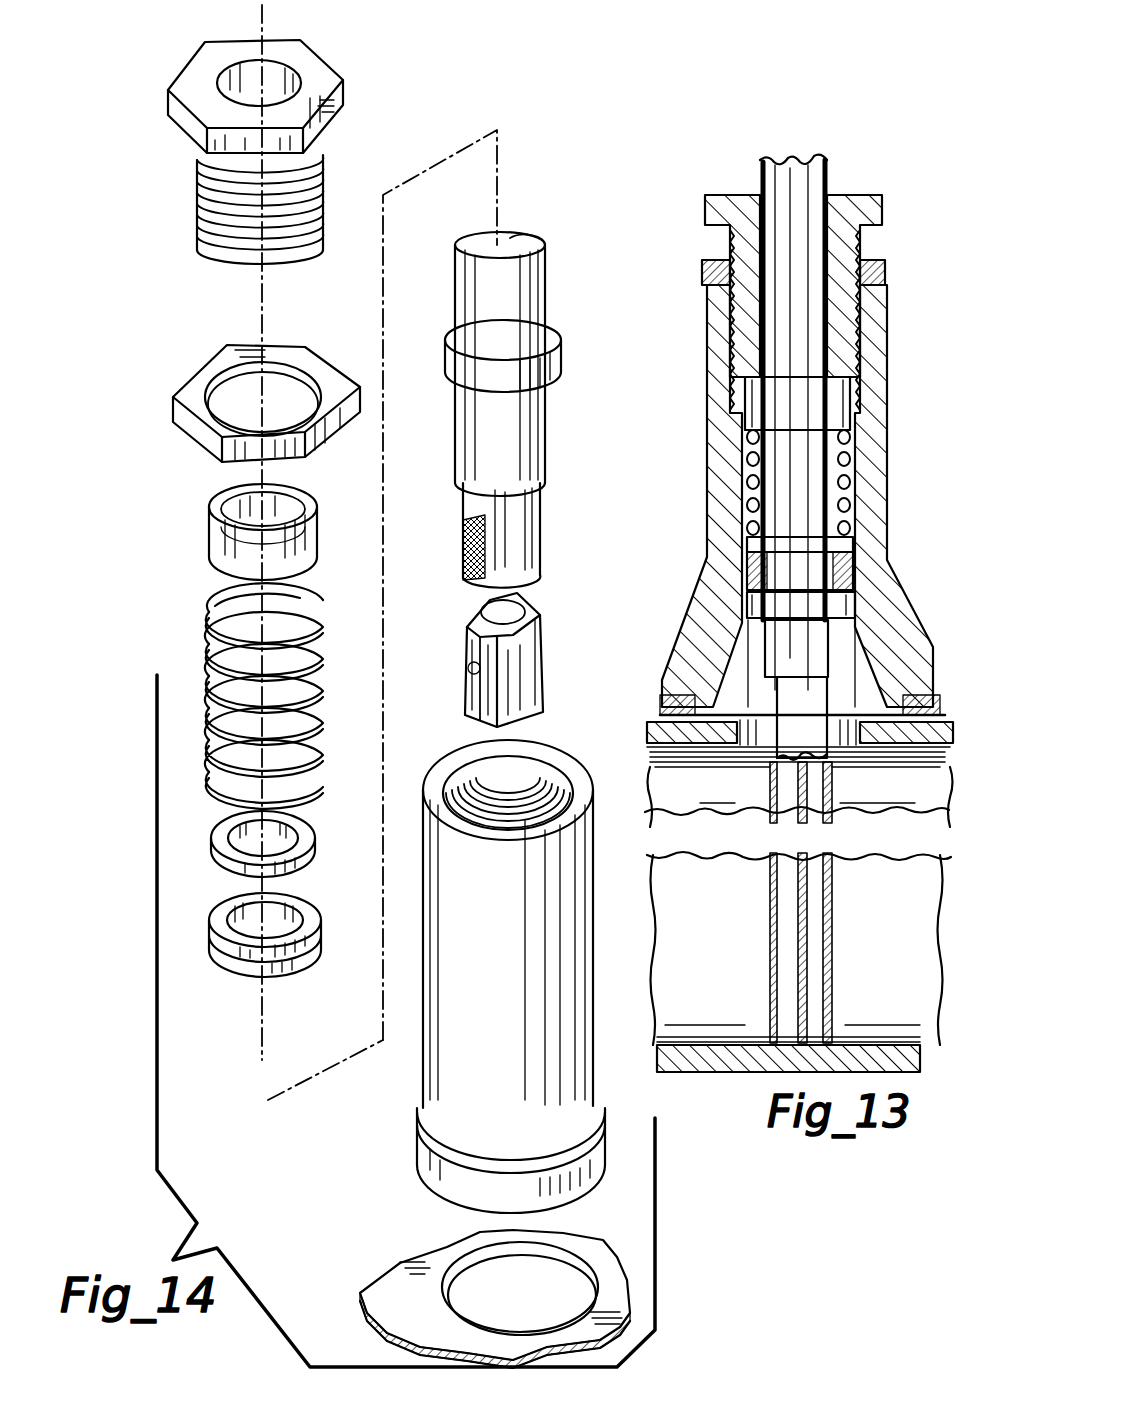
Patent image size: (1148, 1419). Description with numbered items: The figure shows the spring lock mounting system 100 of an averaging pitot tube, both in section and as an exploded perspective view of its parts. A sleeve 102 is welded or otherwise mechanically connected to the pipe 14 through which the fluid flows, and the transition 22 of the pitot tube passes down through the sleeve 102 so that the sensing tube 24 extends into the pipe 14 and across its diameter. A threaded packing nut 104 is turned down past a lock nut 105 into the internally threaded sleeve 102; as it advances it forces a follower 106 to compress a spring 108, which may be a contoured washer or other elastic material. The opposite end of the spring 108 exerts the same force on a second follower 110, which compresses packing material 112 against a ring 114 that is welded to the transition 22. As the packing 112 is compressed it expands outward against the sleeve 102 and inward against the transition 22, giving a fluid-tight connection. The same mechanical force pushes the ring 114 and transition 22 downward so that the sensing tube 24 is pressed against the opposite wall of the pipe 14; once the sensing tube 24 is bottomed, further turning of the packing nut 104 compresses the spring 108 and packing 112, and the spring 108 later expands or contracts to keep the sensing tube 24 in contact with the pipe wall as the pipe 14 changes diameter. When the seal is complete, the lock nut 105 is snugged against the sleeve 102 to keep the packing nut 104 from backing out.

In FIG. 14, the pipe 14 is at (390, 1282).
In FIG. 13, the pipe 14 is at (707, 740).
In FIG. 14, the transition 22 is at (528, 435).
In FIG. 13, the transition 22 is at (790, 195).
In FIG. 14, the sensing tube 24 is at (527, 660).
In FIG. 13, the sensing tube 24 is at (770, 962).
In FIG. 13, the mounting system 100 is at (666, 520).
In FIG. 14, the sleeve 102 is at (490, 1062).
In FIG. 13, the sleeve 102 is at (712, 460).
In FIG. 14, the packing nut 104 is at (197, 195).
In FIG. 13, the packing nut 104 is at (725, 200).
In FIG. 14, the lock nut 105 is at (188, 417).
In FIG. 13, the lock nut 105 is at (705, 268).
In FIG. 14, the follower 106 is at (230, 545).
In FIG. 13, the follower 106 is at (764, 395).
In FIG. 14, the spring 108 is at (220, 693).
In FIG. 13, the spring 108 is at (750, 447).
In FIG. 14, the second follower 110 is at (220, 837).
In FIG. 13, the second follower 110 is at (765, 540).
In FIG. 14, the packing material 112 is at (245, 962).
In FIG. 13, the packing material 112 is at (748, 563).
In FIG. 14, the ring 114 is at (555, 345).
In FIG. 13, the ring 114 is at (762, 603).